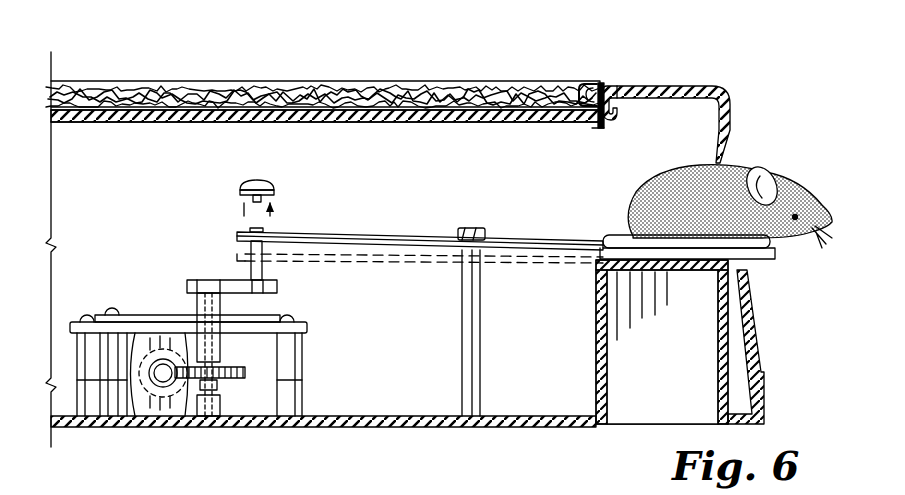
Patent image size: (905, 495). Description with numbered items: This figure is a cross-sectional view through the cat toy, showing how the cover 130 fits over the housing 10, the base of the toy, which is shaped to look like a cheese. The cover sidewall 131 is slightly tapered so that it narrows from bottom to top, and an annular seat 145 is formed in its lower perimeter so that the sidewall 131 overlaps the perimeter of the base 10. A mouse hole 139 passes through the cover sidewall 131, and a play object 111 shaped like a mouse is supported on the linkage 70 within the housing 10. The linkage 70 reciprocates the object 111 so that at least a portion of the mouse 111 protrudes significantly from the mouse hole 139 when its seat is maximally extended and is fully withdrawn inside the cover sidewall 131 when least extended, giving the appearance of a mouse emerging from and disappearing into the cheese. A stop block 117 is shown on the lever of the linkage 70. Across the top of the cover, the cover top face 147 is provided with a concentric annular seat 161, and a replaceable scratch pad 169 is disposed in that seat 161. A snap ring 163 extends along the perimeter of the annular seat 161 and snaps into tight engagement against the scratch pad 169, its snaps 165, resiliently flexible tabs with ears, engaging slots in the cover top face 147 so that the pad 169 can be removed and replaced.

The housing 10 is at (337, 432).
The linkage 70 is at (205, 236).
The play object 111 is at (757, 185).
The lever stop block 117 is at (465, 228).
The cover 130 is at (716, 82).
The cover sidewall 131 is at (752, 310).
The mouse hole 139 is at (733, 150).
The annular seat 145 is at (765, 385).
The cover top face 147 is at (660, 85).
The annular seat 161 is at (420, 110).
The snap ring 163 is at (594, 84).
The snaps 165 is at (600, 130).
The scratch pad 169 is at (298, 88).